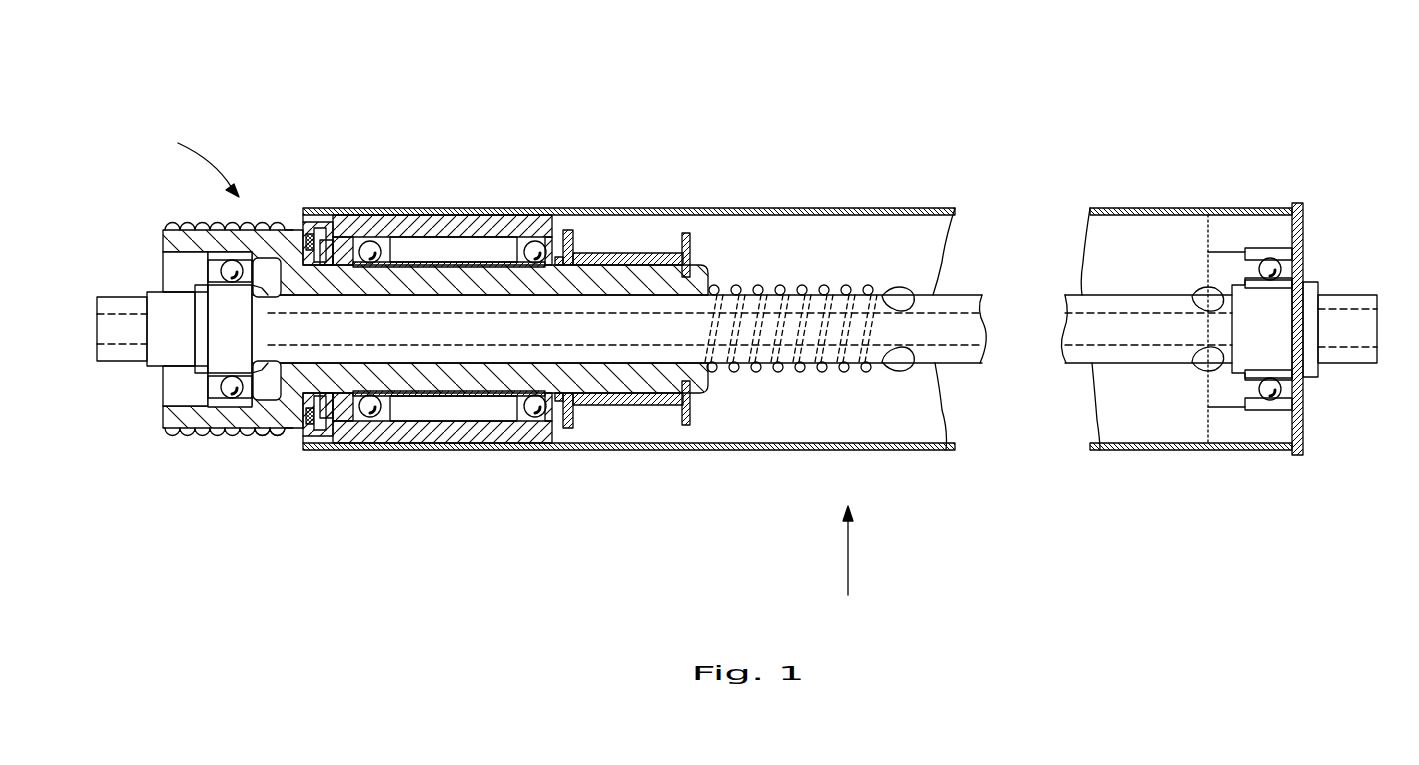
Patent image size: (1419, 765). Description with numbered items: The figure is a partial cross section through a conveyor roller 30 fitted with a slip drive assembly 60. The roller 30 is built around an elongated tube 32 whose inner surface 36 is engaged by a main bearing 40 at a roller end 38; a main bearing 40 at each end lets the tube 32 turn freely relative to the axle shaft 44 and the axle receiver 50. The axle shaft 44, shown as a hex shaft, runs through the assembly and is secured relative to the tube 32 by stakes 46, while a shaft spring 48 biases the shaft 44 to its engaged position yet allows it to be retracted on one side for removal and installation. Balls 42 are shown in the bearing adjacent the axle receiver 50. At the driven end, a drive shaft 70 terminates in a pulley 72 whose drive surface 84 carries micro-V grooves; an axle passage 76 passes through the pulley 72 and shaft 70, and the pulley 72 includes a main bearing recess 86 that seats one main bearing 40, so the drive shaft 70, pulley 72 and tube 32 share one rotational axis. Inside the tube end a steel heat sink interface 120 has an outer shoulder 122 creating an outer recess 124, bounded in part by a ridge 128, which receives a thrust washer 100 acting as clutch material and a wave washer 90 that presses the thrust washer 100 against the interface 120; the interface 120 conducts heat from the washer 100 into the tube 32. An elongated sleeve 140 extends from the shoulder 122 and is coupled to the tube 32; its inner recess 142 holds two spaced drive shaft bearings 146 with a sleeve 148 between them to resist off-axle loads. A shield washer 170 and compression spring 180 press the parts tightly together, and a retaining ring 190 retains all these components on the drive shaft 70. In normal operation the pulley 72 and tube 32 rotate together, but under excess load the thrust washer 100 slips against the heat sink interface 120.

The roller 30 is at (848, 562).
The elongated tube 32 is at (675, 448).
The inner surface 36 is at (770, 240).
The roller end 38 is at (328, 448).
The main bearing 40 is at (217, 257).
The ball bearing 42 is at (215, 390).
The axle shaft 44 is at (103, 362).
The stakes 46 is at (895, 298).
The shaft spring 48 is at (835, 288).
The axle receiver 50 is at (153, 375).
The slip drive assembly 60 is at (194, 165).
The drive shaft 70 is at (292, 440).
The pulley 72 is at (232, 440).
The axle passage 76 is at (513, 368).
The drive surface 84 is at (268, 438).
The main bearing recess 86 is at (176, 275).
The wave washer 90 is at (312, 278).
The thrust washer 100 is at (304, 222).
The heat sink interface 120 is at (422, 222).
The outer shoulder 122 is at (345, 222).
The outer recess 124 is at (312, 222).
The ridge 128 is at (333, 222).
The elongated sleeve 140 is at (536, 440).
The inner recess 142 is at (432, 435).
The drive shaft bearing 146 is at (370, 252).
The sleeve 148 is at (478, 395).
The shield washer 170 is at (568, 232).
The compression spring 180 is at (618, 255).
The retaining ring 190 is at (688, 240).